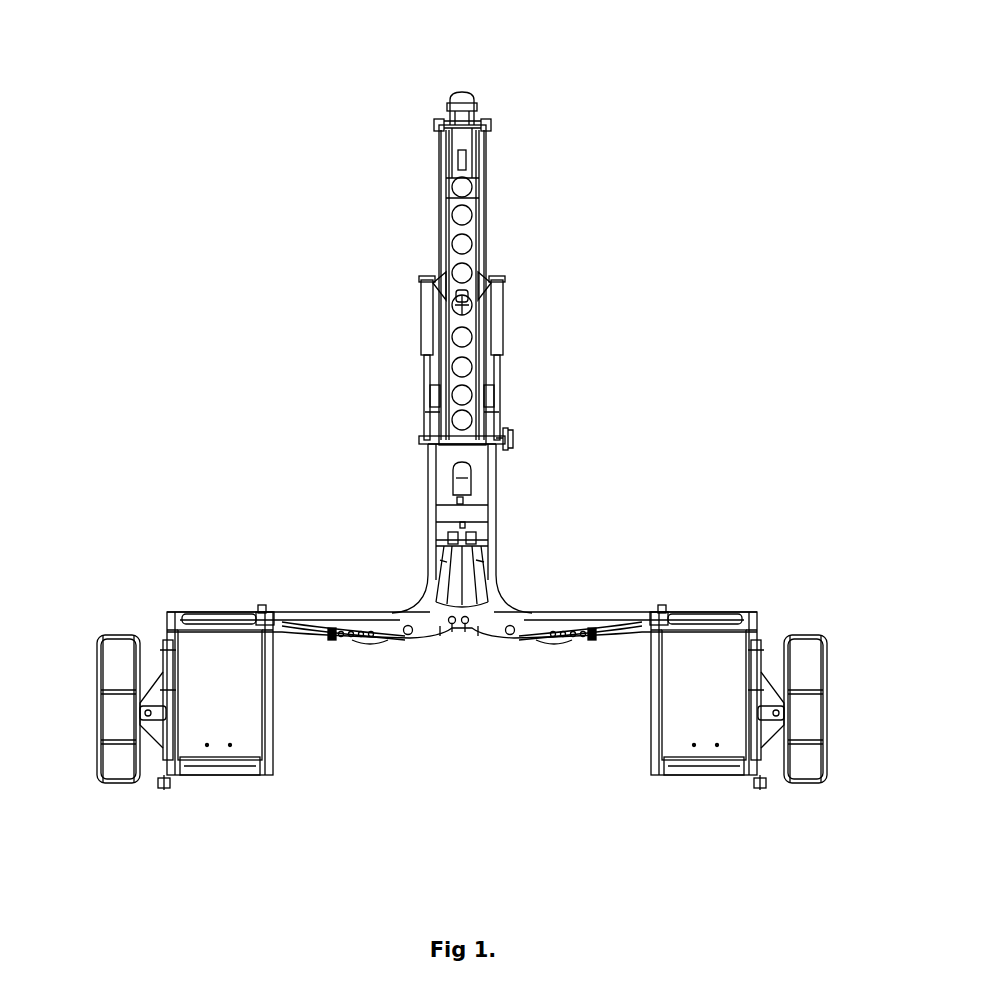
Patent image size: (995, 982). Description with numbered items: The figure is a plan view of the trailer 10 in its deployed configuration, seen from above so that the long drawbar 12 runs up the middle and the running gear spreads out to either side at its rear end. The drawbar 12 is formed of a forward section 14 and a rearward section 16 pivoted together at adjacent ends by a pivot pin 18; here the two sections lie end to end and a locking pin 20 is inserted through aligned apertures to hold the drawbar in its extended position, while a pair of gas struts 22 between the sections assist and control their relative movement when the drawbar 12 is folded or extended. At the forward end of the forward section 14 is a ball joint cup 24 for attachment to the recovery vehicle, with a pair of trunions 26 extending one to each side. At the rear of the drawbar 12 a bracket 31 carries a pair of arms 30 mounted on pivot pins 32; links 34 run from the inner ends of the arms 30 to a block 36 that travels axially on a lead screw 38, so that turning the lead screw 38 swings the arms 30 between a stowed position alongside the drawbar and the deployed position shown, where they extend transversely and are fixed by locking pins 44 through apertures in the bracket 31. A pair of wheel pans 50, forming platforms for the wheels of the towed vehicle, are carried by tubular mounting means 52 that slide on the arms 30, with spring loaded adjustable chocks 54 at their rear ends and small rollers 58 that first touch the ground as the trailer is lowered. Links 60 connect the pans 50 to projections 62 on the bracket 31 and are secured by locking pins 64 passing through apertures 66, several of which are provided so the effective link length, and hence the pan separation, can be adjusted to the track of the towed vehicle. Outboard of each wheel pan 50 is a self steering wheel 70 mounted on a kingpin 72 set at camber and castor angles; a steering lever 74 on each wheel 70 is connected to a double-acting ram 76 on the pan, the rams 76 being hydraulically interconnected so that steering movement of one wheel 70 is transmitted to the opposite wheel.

The trailer 10 is at (592, 164).
The drawbar 12 is at (489, 240).
The forward section 14 is at (440, 222).
The rearward section 16 is at (432, 494).
The pivot pin 18 is at (430, 400).
The locking pin 20 is at (512, 440).
The gas struts 22 is at (424, 326).
The ball joint cup 24 is at (455, 92).
The trunions 26 is at (436, 122).
The arms 30 is at (352, 612).
The bracket 31 is at (492, 611).
The pivot pins 32 is at (408, 636).
The links 34 is at (448, 572).
The block 36 is at (446, 550).
The lead screw 38 is at (455, 592).
The locking pins 44 is at (465, 626).
The wheel pans 50 is at (248, 735).
The tubular mounting means 52 is at (200, 612).
The spring loaded adjustable chocks 54 is at (215, 778).
The small rollers 58 is at (166, 788).
The links 60 is at (262, 605).
The projections 62 is at (386, 642).
The locking pins 64 is at (300, 622).
The apertures 66 is at (347, 641).
The self steering wheels 70 is at (112, 650).
The kingpins 72 is at (150, 714).
The steering levers 74 is at (112, 740).
The double-acting rams 76 is at (168, 660).